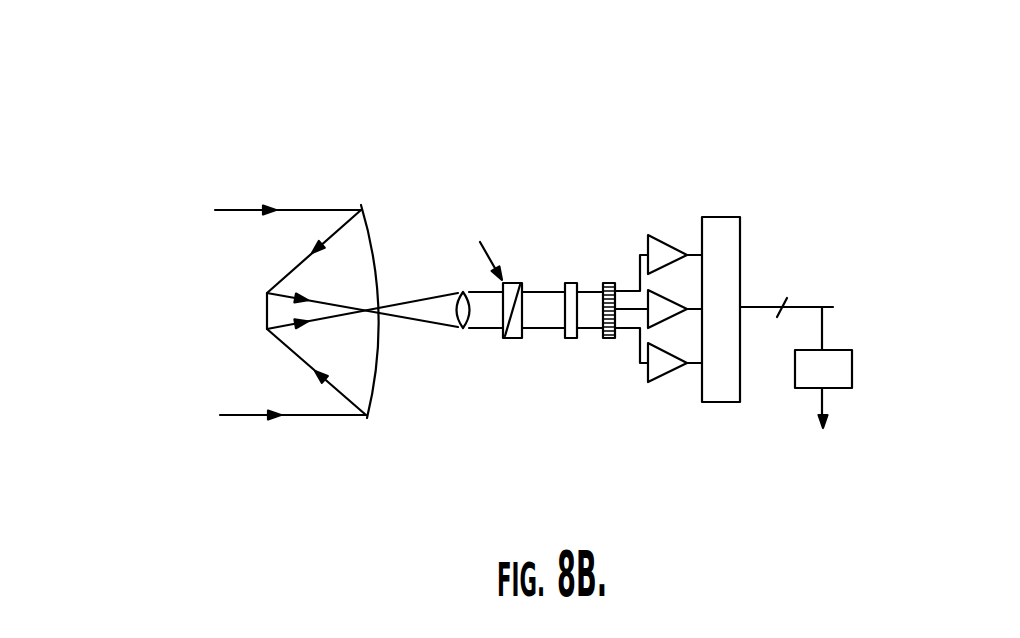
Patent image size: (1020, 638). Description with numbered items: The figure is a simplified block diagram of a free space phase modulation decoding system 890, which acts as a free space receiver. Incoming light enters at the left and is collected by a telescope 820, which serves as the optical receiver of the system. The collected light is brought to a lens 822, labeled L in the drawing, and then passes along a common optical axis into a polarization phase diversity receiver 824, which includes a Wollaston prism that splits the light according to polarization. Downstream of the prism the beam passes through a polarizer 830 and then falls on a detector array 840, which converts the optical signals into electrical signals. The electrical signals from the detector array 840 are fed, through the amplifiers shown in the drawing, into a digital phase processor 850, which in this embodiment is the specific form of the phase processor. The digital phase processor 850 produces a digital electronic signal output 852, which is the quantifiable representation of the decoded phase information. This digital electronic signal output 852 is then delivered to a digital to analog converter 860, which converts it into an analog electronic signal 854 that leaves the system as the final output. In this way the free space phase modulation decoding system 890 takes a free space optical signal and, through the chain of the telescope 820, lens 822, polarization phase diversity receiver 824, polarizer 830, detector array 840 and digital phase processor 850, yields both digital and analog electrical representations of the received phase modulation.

The free space phase modulation decoding system 890 is at (400, 93).
The telescope 820 is at (304, 193).
The lens 822 is at (443, 277).
The polarization phase diversity receiver 824 is at (507, 338).
The polarizer 830 is at (565, 282).
The detector array 840 is at (610, 282).
The digital phase processor 850 is at (727, 216).
The digital electronic signal output 852 is at (790, 290).
The analog electronic signal 854 is at (828, 425).
The digital to analog converter 860 is at (870, 352).